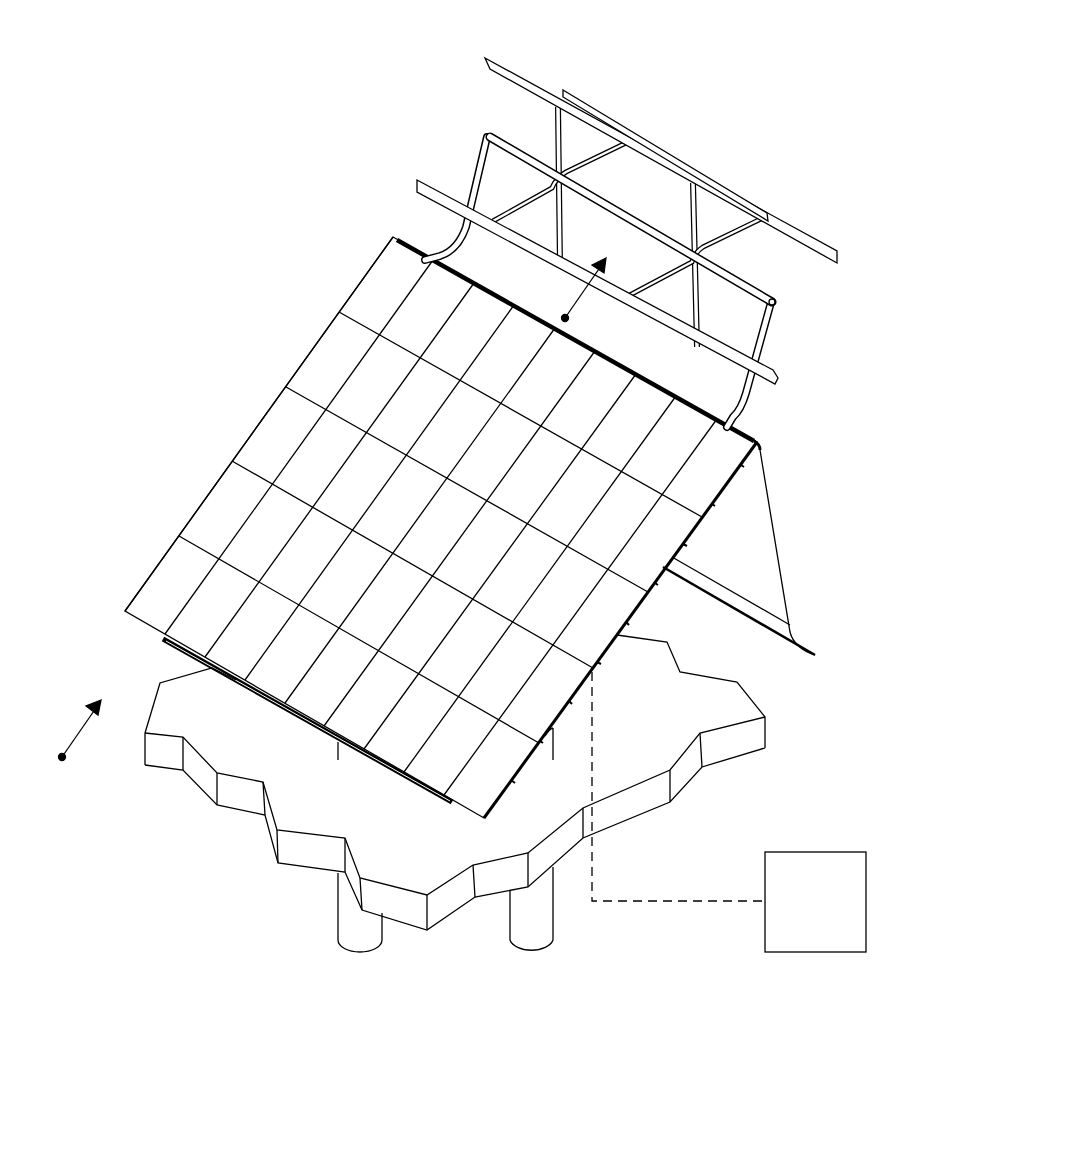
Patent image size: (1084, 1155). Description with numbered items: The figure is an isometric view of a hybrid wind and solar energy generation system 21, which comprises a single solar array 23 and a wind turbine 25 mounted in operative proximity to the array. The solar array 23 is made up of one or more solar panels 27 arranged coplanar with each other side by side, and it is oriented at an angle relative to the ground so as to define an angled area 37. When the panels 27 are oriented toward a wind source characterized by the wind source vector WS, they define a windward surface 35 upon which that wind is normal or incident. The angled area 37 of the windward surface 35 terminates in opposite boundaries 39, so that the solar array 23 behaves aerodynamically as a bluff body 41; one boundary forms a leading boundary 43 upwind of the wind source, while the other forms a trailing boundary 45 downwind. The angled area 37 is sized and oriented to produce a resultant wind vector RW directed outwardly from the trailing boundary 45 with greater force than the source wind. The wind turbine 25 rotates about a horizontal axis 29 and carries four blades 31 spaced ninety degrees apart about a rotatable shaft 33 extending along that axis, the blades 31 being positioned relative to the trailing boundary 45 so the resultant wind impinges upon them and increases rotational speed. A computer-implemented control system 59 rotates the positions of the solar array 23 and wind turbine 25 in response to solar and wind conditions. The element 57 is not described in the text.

The hybrid wind and solar energy generation system 21 is at (286, 232).
The solar array 23 is at (238, 410).
The wind turbine 25 is at (438, 116).
The solar panels 27 is at (320, 346).
The horizontal axis 29 is at (776, 309).
The blades 31 is at (525, 78).
The rotatable shaft 33 is at (745, 285).
The windward surface 35 is at (206, 506).
The angled area 37 is at (452, 533).
The boundaries 39 is at (766, 428).
The bluff body 41 is at (827, 448).
The leading boundary 43 is at (152, 633).
The trailing boundary 45 is at (417, 243).
The panel frame 57 is at (198, 468).
The computer-implemented control system 59 is at (815, 902).